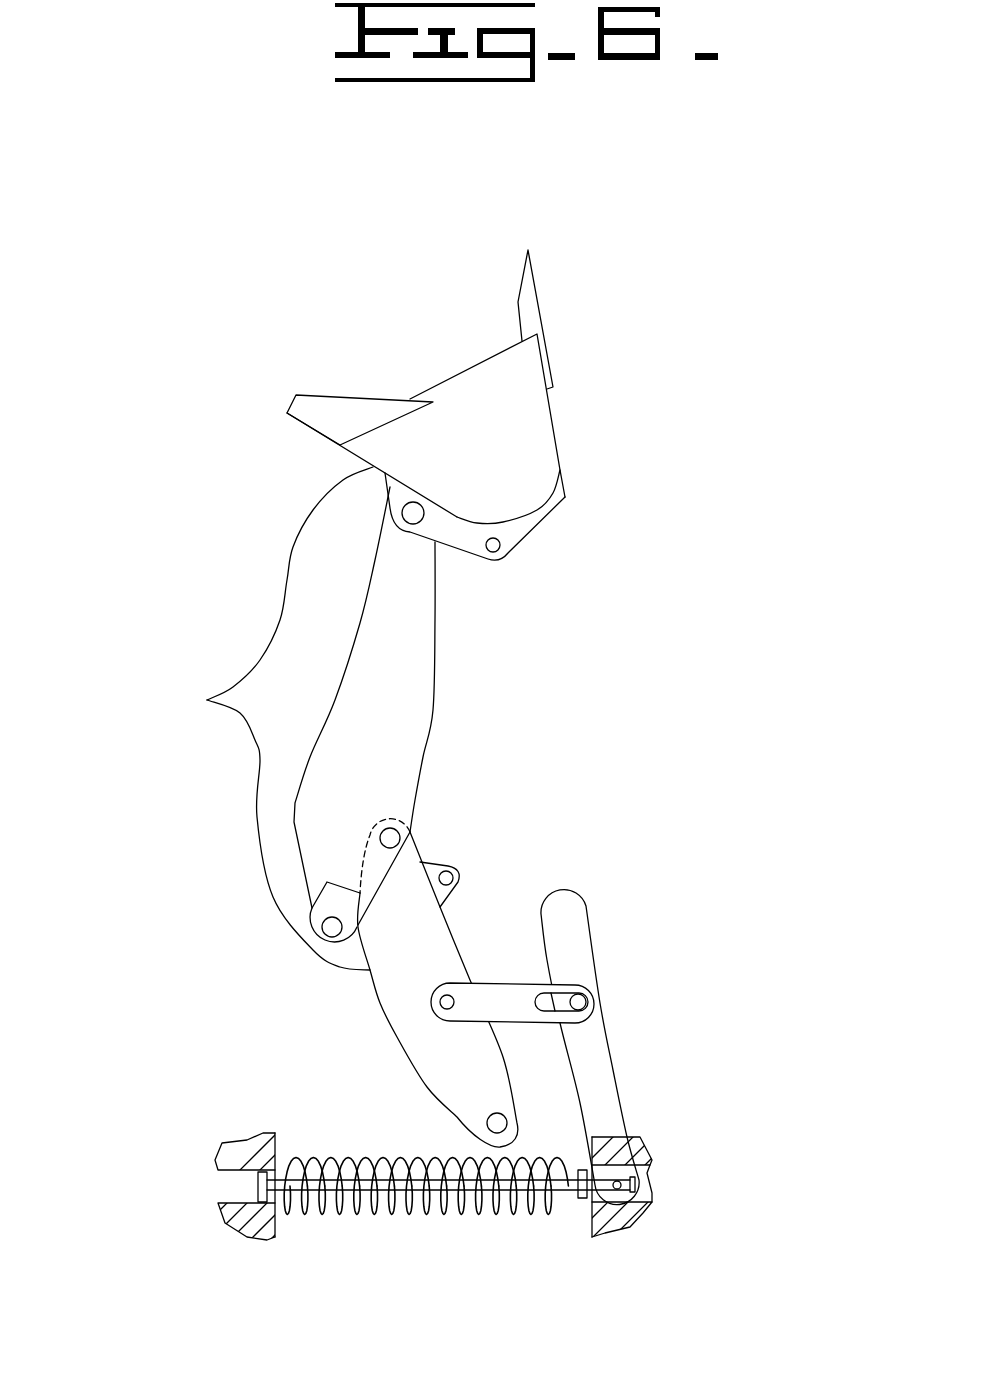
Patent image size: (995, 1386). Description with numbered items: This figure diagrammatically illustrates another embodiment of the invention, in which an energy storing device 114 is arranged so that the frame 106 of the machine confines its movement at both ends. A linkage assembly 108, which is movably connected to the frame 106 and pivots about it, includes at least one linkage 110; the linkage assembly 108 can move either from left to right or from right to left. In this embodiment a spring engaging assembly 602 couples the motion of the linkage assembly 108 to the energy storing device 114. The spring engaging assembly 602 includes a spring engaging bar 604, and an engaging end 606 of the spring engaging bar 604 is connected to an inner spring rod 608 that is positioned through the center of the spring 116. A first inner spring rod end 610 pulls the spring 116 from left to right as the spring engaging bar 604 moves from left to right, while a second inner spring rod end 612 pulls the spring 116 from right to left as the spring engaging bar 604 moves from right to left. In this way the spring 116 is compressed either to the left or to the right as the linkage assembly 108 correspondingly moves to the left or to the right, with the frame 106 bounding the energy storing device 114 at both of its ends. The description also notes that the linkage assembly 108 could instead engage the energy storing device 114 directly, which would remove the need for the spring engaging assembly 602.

The frame 106 is at (233, 1143).
The linkage assembly 108 is at (191, 548).
The linkage 110 is at (353, 643).
The energy storing device 114 is at (396, 1224).
The spring 116 is at (343, 1160).
The spring engaging assembly 602 is at (572, 1012).
The spring engaging bar 604 is at (605, 1018).
The engaging end 606 is at (636, 1186).
The inner spring rod 608 is at (278, 1192).
The first inner spring rod end 610 is at (257, 1190).
The second inner spring rod end 612 is at (579, 1195).